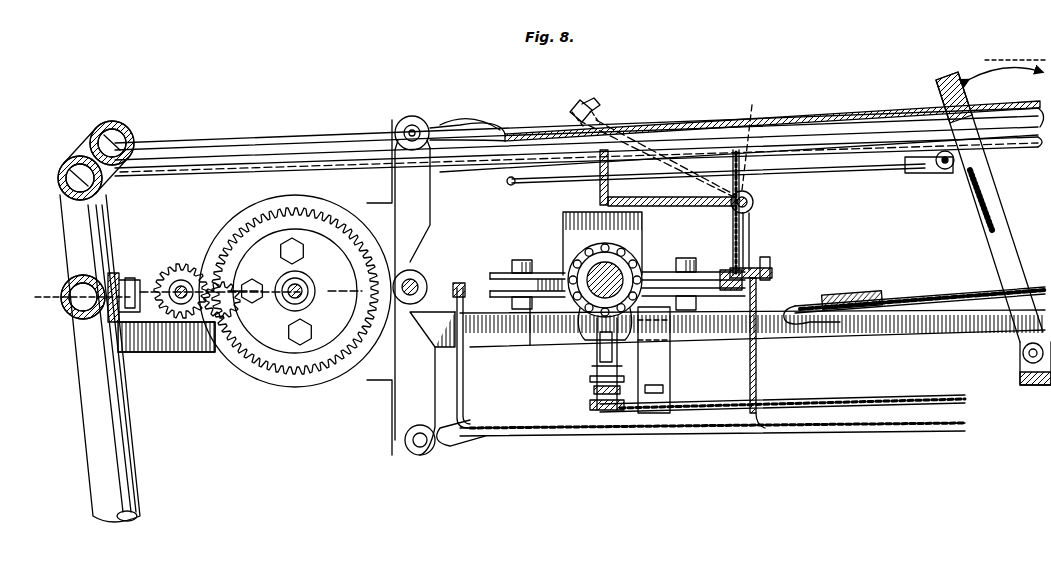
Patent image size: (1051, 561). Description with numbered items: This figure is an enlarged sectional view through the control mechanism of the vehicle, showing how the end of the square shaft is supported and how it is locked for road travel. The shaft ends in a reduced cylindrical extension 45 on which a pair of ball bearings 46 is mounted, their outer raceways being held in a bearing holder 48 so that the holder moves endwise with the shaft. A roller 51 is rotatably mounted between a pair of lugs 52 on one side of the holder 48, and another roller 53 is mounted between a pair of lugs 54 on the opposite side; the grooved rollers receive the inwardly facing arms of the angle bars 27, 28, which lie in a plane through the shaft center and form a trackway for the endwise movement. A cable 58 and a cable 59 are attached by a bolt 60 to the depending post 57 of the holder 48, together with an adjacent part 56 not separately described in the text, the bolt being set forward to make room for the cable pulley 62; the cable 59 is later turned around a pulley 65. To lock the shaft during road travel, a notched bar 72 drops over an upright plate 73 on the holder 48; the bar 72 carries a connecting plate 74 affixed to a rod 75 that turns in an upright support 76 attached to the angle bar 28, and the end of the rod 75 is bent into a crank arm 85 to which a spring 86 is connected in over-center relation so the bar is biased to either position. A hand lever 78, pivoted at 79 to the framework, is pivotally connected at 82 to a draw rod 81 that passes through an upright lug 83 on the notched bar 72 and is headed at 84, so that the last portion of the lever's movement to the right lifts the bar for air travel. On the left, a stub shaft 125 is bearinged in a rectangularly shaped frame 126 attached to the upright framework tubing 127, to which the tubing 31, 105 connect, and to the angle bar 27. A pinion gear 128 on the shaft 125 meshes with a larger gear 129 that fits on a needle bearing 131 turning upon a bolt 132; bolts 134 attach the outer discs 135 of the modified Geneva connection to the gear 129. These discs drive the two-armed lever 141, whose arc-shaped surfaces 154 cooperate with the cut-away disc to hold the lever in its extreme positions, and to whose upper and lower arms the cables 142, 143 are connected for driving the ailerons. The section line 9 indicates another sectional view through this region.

The tubing 105 is at (56, 170).
The section line 9— 9 is at (45, 312).
The rectangularly shaped frame 126 is at (126, 274).
The pinion gear 128 is at (160, 276).
The stub shaft 125 is at (194, 264).
The larger gear 129 is at (233, 266).
The outer discs 135 is at (254, 212).
The needle bearing 131 is at (308, 296).
The bolt 132 is at (264, 302).
The bolts 134 is at (282, 247).
The arc-shaped outer surfaces 154 is at (370, 214).
The two-armed lever 141 is at (400, 378).
The cable 142 is at (582, 126).
The cable 143 is at (592, 438).
The framework tubing 127 is at (118, 406).
The tubing 31 is at (205, 352).
The angle bar 27 is at (460, 283).
The roller 51 is at (502, 274).
The lugs 52 is at (532, 268).
The upright plate 73 is at (566, 228).
The reduced cylindrical extension 45 is at (585, 263).
The ball bearings 46 is at (628, 262).
The bearing holder 48 is at (638, 256).
The stem 56 is at (598, 345).
The depending post 57 is at (598, 360).
The bolt 60 is at (592, 378).
The cable 59 is at (594, 390).
The cable 58 is at (592, 406).
The cable pulley 62 is at (668, 400).
The lugs 54 is at (682, 258).
The roller 53 is at (727, 270).
The notched bar 72 is at (599, 180).
The connecting plate 74 is at (672, 205).
The rod 75 is at (753, 202).
The spring 86 is at (730, 215).
The upright support 76 is at (750, 228).
The angle bar 28 is at (756, 268).
The crank arm 85 is at (743, 160).
The upright lug 83 is at (598, 163).
The head 84 is at (507, 183).
The draw rod 81 is at (833, 170).
The pivot 82 is at (945, 170).
The hand lever 78 is at (982, 210).
The pivot 79 is at (1022, 352).
The pulley 65 is at (863, 292).